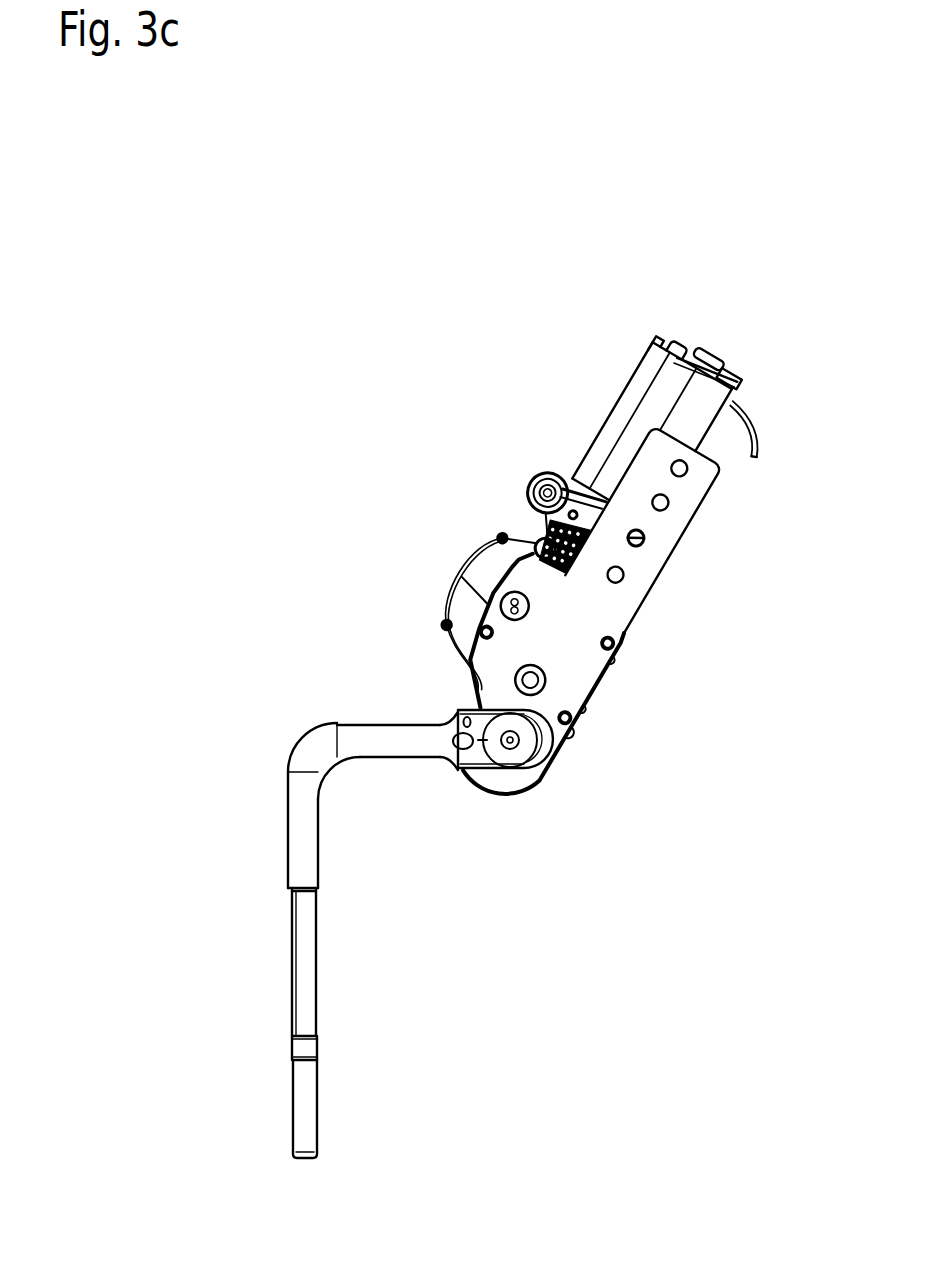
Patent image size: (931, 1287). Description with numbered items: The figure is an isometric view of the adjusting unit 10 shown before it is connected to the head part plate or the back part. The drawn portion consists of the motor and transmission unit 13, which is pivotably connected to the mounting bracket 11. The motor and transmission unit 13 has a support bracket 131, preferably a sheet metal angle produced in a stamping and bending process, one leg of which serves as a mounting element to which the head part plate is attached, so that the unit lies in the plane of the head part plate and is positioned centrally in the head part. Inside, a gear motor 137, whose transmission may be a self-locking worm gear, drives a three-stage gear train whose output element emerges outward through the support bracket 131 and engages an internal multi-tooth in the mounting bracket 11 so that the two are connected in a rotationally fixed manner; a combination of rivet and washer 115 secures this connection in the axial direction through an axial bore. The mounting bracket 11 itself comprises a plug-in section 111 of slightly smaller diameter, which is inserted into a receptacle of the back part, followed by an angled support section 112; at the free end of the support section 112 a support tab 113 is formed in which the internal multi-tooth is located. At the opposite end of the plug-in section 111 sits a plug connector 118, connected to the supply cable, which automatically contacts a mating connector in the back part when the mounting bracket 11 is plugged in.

The adjusting unit 10 is at (664, 889).
The mounting bracket 11 is at (344, 868).
The plug-in section 111 is at (303, 983).
The support section 112 is at (318, 747).
The support tab 113 is at (471, 755).
The combination of rivet and washer 115 is at (520, 748).
The plug connector 118 is at (297, 1098).
The motor and transmission unit 13 is at (486, 465).
The support bracket 131 is at (602, 603).
The gear motor 137 is at (618, 417).